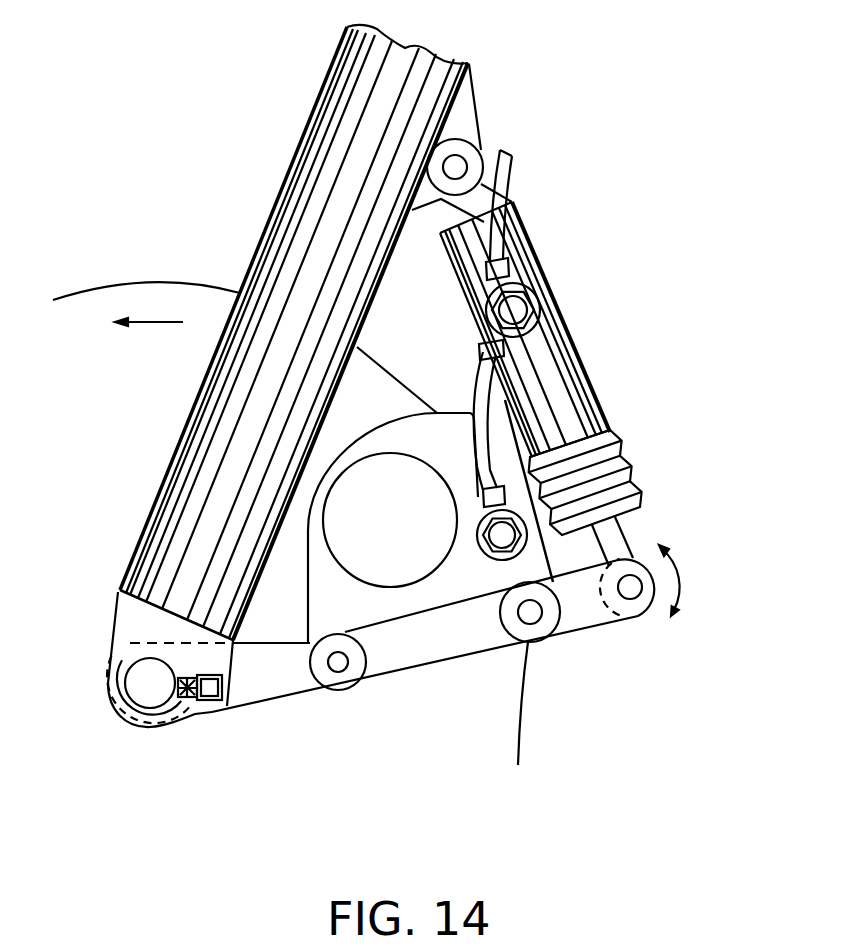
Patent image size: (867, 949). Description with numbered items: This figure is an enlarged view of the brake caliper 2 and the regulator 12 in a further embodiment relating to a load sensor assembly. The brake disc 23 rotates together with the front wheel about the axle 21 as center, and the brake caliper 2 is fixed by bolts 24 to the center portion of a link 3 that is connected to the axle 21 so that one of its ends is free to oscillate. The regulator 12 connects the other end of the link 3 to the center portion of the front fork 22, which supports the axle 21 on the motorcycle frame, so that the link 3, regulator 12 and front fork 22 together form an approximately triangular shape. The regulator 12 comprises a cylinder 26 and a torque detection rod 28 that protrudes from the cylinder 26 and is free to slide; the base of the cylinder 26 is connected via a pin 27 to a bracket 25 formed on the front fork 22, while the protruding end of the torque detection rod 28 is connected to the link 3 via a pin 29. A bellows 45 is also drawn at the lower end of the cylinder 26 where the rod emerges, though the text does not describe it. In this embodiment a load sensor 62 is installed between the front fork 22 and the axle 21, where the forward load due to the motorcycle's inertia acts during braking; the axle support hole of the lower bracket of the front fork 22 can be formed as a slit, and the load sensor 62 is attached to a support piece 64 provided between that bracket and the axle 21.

The brake caliper 2 is at (402, 585).
The link 3 is at (587, 632).
The regulator 12 is at (571, 384).
The axle 21 is at (133, 683).
The front fork 22 is at (283, 200).
The brake disc 23 is at (193, 283).
The bolts 24 is at (338, 665).
The bracket 25 is at (458, 118).
The cylinder 26 is at (533, 243).
The pin 27 is at (530, 123).
The torque detection rod 28 is at (612, 533).
The pin 29 is at (631, 593).
The bellows 45 is at (623, 447).
The load sensor 62 is at (178, 700).
The support piece 64 is at (205, 690).